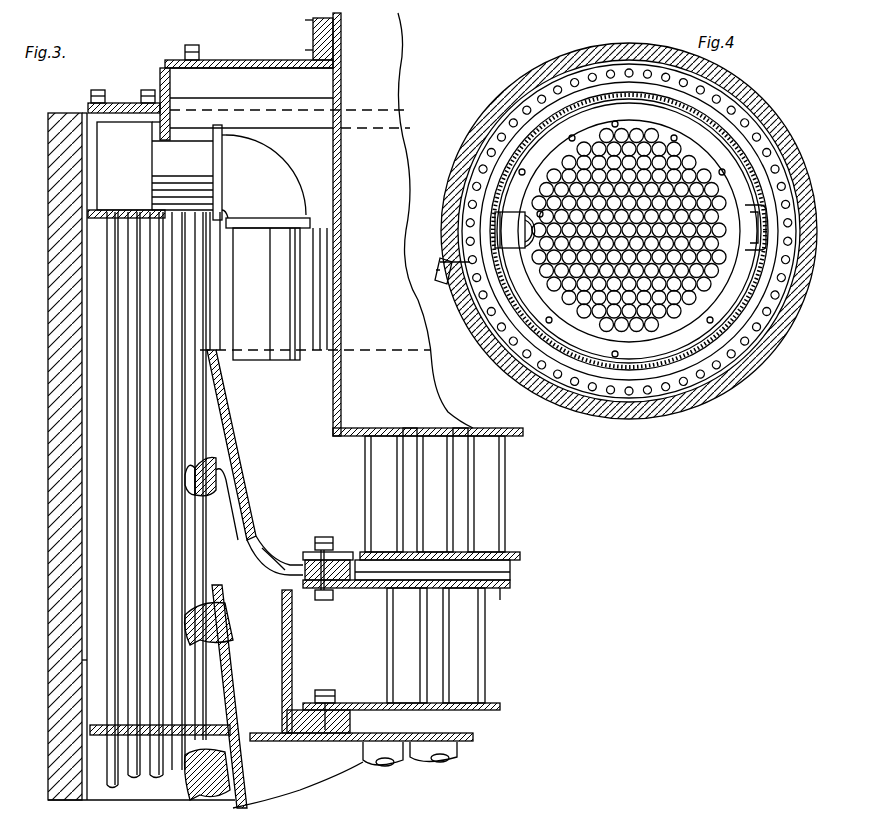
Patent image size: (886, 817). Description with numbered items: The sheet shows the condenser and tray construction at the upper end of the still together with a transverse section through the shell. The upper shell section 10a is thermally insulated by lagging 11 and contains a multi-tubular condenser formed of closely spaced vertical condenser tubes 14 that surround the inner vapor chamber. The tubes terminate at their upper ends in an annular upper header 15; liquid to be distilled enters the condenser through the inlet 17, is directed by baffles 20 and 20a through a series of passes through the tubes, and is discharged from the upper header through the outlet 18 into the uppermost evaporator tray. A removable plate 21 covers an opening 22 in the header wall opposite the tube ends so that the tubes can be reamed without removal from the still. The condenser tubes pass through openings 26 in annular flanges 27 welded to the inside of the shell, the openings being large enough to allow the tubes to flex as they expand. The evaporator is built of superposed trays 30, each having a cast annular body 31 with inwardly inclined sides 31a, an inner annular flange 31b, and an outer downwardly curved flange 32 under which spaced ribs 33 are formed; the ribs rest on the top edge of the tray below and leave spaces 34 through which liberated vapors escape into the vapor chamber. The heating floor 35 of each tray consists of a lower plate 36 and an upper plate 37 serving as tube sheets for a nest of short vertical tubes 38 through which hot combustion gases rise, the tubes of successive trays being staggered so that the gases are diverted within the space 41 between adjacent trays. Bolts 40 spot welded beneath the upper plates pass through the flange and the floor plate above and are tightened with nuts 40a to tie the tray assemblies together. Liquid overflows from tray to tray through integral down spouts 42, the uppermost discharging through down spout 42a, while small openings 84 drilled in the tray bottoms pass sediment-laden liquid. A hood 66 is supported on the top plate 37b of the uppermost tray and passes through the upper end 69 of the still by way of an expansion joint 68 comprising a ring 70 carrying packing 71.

In FIG. 3, the upper shell section 10a is at (82, 652).
In FIG. 4, the upper shell section 10a is at (515, 80).
In FIG. 3, the lagging 11 is at (66, 314).
In FIG. 4, the lagging 11 is at (555, 66).
In FIG. 3, the condenser tubes 14 is at (133, 358).
In FIG. 4, the condenser tubes 14 is at (510, 345).
In FIG. 3, the upper header 15 is at (126, 170).
In FIG. 4, the upper header 15 is at (760, 360).
In FIG. 3, the inlet 17 is at (434, 305).
In FIG. 4, the inlet 17 is at (442, 284).
In FIG. 3, the outlet 18 is at (291, 242).
In FIG. 4, the outlet 18 is at (515, 219).
In FIG. 3, the baffles 20 is at (425, 239).
In FIG. 4, the baffles 20 is at (540, 90).
In FIG. 3, the baffles 20a is at (312, 808).
In FIG. 4, the baffles 20a is at (660, 60).
In FIG. 3, the removable plate 21 is at (118, 115).
In FIG. 3, the opening 22 is at (115, 110).
In FIG. 3, the openings 26 is at (100, 735).
In FIG. 3, the annular flanges 27 is at (188, 760).
In FIG. 3, the trays 30 is at (235, 735).
In FIG. 3, the annular body 31 is at (258, 555).
In FIG. 3, the sides 31a is at (228, 490).
In FIG. 3, the inner annular flange 31b is at (336, 560).
In FIG. 3, the flange 32 is at (210, 470).
In FIG. 3, the ribs 33 is at (215, 490).
In FIG. 3, the spaces 34 is at (225, 640).
In FIG. 3, the heating floor 35 is at (520, 508).
In FIG. 3, the lower plate 36 is at (518, 553).
In FIG. 4, the lower plate 36 is at (690, 155).
In FIG. 3, the upper plate 37 is at (500, 600).
In FIG. 3, the top plate 37b is at (355, 428).
In FIG. 3, the tubes 38 is at (490, 482).
In FIG. 4, the tubes 38 is at (645, 132).
In FIG. 3, the bolts 40 is at (318, 575).
In FIG. 3, the nuts 40a is at (322, 537).
In FIG. 3, the space 41 is at (490, 574).
In FIG. 3, the down spouts 42 is at (270, 655).
In FIG. 4, the down spout 42a is at (770, 205).
In FIG. 3, the hood 66 is at (341, 328).
In FIG. 3, the expansion joint 68 is at (312, 22).
In FIG. 3, the upper end 69 is at (228, 62).
In FIG. 3, the ring 70 is at (313, 32).
In FIG. 3, the packing 71 is at (312, 48).
In FIG. 3, the openings 84 is at (270, 546).